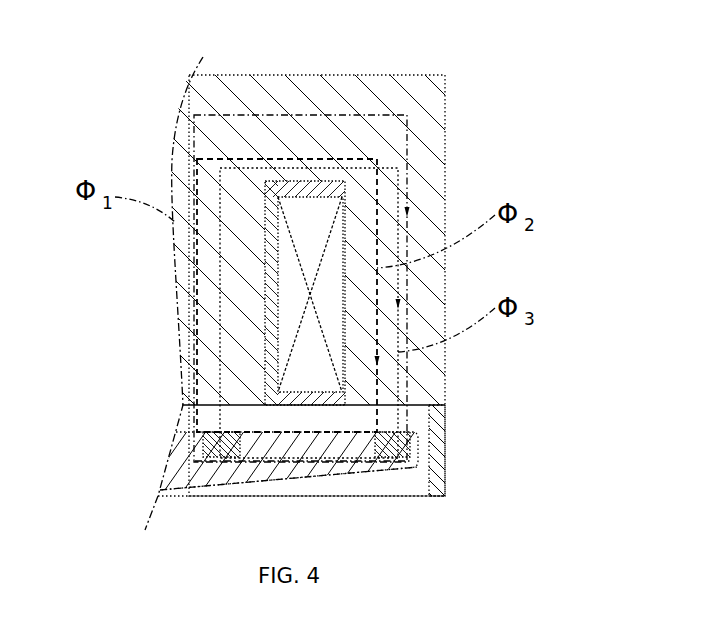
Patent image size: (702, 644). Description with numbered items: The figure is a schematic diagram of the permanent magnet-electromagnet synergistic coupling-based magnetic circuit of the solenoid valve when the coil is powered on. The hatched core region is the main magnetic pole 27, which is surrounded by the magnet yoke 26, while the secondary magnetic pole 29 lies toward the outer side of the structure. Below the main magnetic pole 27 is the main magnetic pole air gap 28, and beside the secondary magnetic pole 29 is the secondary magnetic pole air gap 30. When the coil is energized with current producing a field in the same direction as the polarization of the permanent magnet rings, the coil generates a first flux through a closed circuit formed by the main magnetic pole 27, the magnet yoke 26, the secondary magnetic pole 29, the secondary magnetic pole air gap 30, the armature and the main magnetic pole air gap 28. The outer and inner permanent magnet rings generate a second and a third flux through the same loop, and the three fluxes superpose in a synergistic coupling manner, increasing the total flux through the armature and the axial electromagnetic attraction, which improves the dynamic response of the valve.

The magnet yoke 26 is at (300, 137).
The main magnetic pole 27 is at (238, 290).
The main magnetic pole air gap 28 is at (228, 419).
The secondary magnetic pole 29 is at (427, 242).
The secondary magnetic pole air gap 30 is at (387, 418).